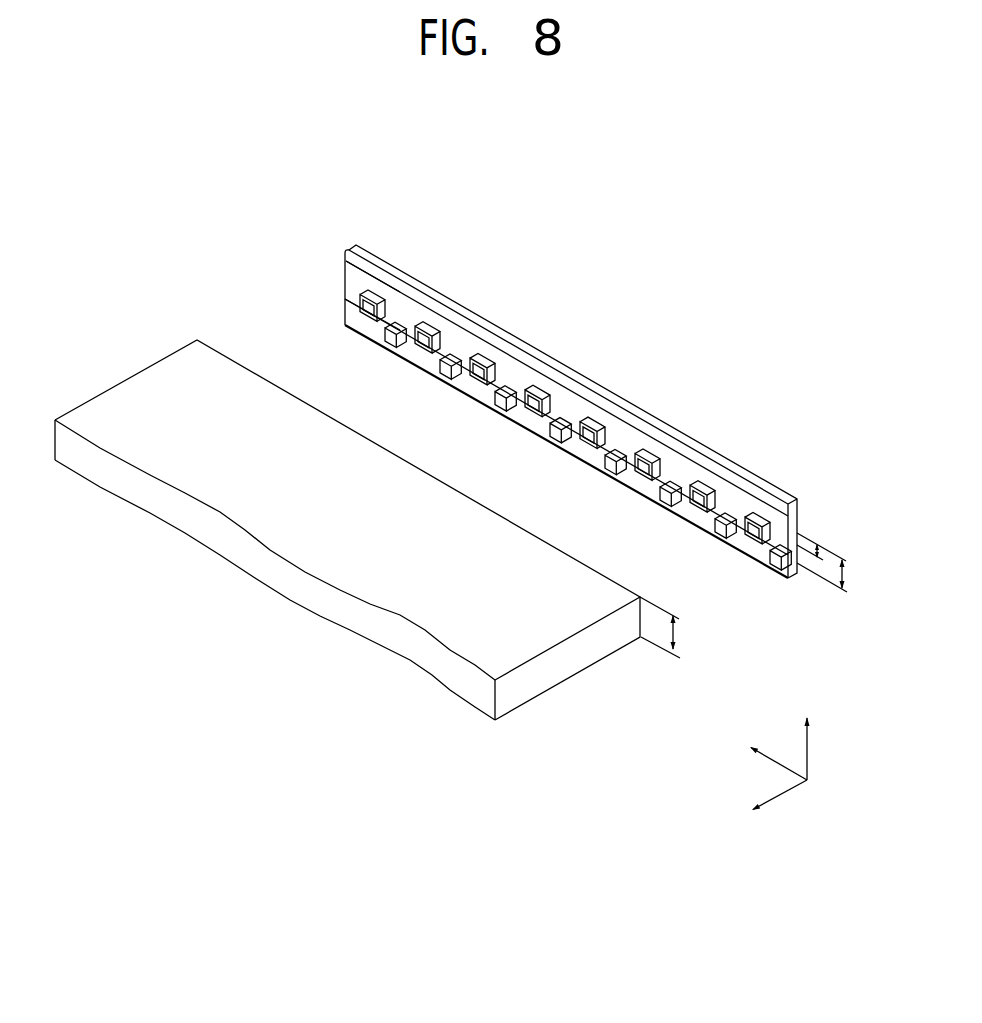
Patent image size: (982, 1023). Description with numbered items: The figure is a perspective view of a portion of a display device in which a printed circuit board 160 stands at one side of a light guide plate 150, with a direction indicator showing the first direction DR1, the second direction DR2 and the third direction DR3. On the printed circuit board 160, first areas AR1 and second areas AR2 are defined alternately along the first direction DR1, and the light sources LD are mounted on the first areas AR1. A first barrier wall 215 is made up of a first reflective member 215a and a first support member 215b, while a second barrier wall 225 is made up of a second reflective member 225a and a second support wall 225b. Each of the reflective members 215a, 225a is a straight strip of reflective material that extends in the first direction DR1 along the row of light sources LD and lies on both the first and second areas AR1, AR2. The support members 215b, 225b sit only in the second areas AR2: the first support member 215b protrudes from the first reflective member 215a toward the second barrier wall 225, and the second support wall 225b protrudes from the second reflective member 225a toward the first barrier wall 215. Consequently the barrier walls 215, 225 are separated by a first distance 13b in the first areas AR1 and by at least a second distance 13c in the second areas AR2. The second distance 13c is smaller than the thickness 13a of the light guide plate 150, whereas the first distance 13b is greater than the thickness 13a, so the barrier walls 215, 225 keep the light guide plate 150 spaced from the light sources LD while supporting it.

The light guide plate 150 is at (575, 658).
The printed circuit board 160 is at (792, 496).
The thickness of the light guide plate 13a is at (677, 627).
The first distance 13b is at (839, 575).
The second distance 13c is at (818, 558).
The first barrier wall 215 is at (238, 224).
The first reflective member 215a is at (368, 292).
The first support member 215b is at (368, 318).
The second barrier wall 225 is at (238, 289).
The second reflective member 225a is at (378, 327).
The second support wall 225b is at (380, 350).
The first area AR1 is at (747, 571).
The second area AR2 is at (769, 583).
The light source LD is at (556, 447).
The first direction DR1 is at (757, 759).
The second direction DR2 is at (757, 805).
The third direction DR3 is at (810, 737).